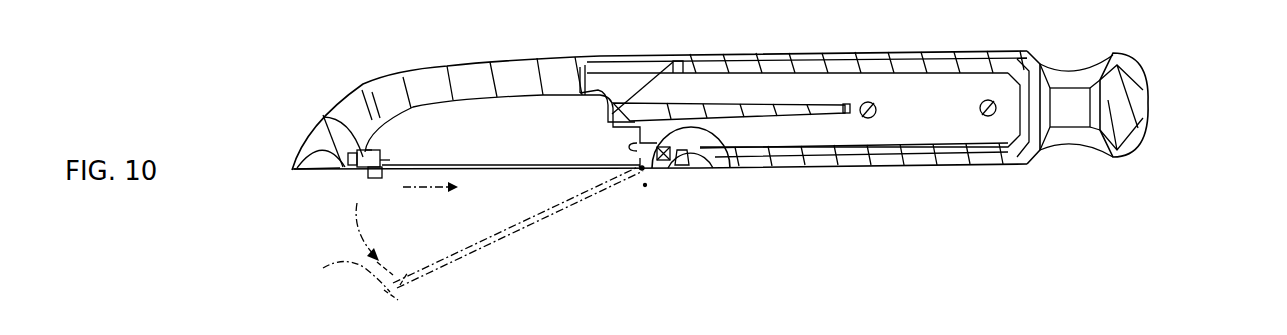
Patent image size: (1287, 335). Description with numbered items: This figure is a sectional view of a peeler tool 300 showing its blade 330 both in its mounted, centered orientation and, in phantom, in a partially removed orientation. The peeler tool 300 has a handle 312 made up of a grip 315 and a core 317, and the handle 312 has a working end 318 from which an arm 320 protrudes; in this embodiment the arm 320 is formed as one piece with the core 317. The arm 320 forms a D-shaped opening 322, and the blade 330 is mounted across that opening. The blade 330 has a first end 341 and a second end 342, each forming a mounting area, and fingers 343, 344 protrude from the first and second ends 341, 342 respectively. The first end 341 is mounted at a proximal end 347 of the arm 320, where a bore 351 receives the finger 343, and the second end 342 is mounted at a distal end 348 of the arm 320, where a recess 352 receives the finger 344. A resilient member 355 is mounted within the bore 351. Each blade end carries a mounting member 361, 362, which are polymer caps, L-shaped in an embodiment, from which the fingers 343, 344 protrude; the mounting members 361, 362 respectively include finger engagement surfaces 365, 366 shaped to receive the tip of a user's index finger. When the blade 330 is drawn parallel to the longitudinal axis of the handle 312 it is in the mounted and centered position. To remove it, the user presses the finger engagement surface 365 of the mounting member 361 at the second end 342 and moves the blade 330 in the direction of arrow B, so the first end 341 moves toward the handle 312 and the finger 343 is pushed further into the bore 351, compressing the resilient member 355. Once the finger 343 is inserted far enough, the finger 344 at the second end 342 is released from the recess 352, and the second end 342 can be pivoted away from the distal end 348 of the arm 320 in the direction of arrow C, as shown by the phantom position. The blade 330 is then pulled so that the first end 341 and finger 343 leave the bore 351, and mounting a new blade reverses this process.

The peeler tool 300 is at (1209, 86).
The handle 312 is at (935, 165).
The grip 315 is at (868, 165).
The core 317 is at (913, 93).
The working end 318 is at (673, 62).
The arm 320 is at (484, 66).
The D-shaped opening 322 is at (384, 123).
The blade 330 is at (502, 148).
The first end 341 is at (643, 193).
The second end 342 is at (383, 165).
The finger 343 is at (647, 165).
The finger 344 is at (327, 122).
The proximal end 347 is at (716, 57).
The distal end 348 is at (327, 152).
The bore 351 is at (727, 163).
The recess 352 is at (337, 163).
The resilient member 355 is at (697, 163).
The mounting member 361 is at (370, 150).
The mounting member 362 is at (640, 150).
The finger engagement surface 365 is at (375, 178).
The finger engagement surface 366 is at (645, 188).